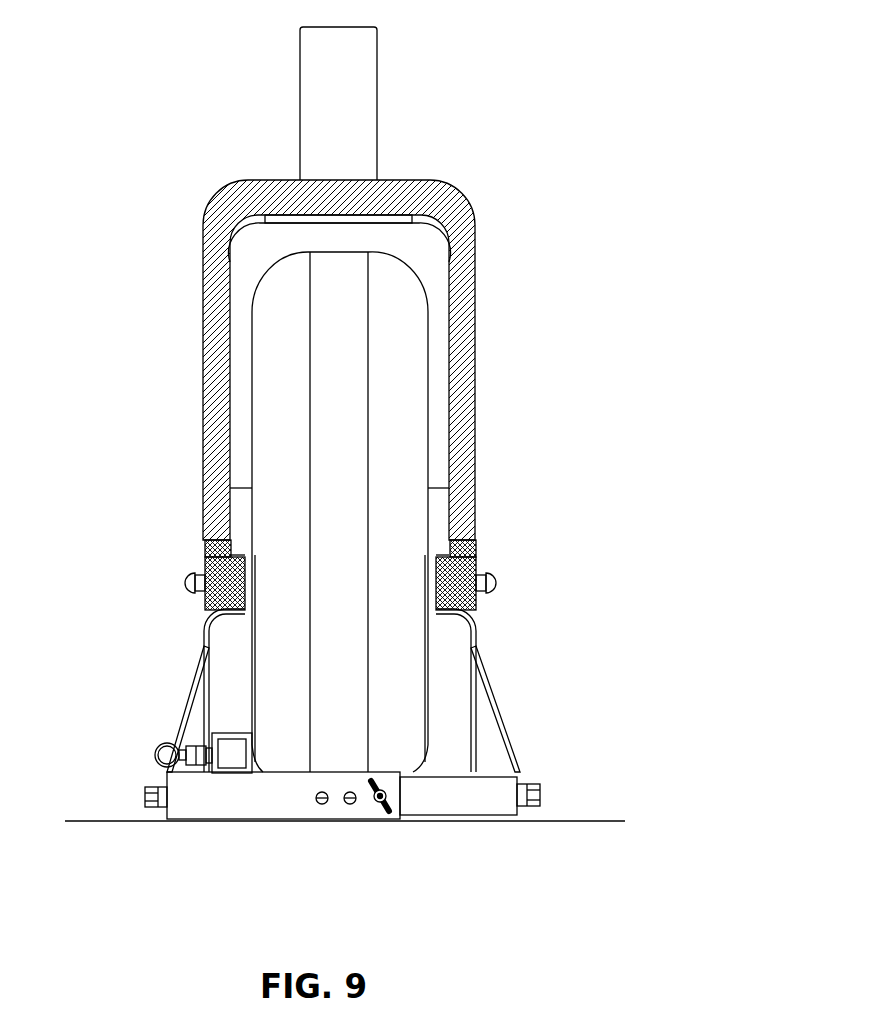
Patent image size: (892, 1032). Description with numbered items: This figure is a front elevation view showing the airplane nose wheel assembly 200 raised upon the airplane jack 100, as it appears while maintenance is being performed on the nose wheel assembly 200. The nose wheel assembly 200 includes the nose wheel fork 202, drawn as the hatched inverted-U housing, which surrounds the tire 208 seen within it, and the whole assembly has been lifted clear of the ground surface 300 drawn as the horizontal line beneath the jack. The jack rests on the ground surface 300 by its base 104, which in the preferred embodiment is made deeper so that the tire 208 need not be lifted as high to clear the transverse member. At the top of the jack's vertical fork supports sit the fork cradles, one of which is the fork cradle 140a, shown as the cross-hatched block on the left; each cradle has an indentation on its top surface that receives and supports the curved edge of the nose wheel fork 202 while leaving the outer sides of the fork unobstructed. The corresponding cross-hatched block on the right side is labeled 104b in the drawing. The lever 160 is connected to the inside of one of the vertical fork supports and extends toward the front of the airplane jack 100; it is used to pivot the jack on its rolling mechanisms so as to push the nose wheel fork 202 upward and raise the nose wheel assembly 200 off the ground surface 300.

The airplane jack 100 is at (388, 673).
The base 104 is at (398, 673).
The frame mount block 104b is at (452, 561).
The fork cradle 140a is at (228, 560).
The lever 160 is at (232, 750).
The nose wheel assembly 200 is at (401, 399).
The nose wheel fork 202 is at (217, 296).
The tire 208 is at (392, 307).
The ground surface 300 is at (111, 822).